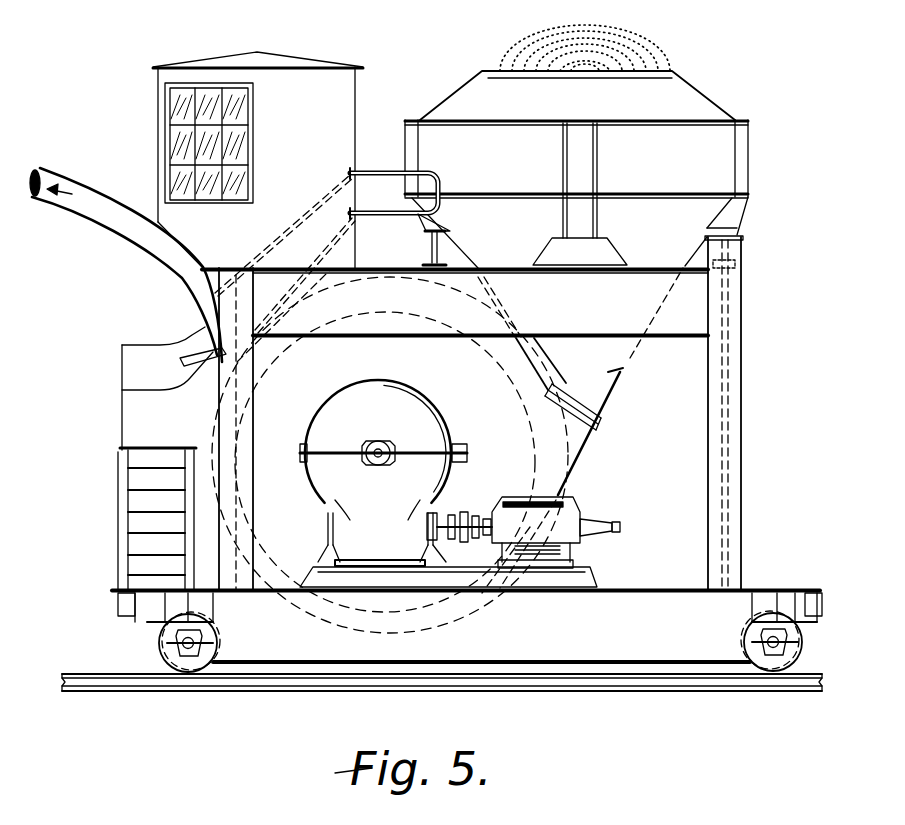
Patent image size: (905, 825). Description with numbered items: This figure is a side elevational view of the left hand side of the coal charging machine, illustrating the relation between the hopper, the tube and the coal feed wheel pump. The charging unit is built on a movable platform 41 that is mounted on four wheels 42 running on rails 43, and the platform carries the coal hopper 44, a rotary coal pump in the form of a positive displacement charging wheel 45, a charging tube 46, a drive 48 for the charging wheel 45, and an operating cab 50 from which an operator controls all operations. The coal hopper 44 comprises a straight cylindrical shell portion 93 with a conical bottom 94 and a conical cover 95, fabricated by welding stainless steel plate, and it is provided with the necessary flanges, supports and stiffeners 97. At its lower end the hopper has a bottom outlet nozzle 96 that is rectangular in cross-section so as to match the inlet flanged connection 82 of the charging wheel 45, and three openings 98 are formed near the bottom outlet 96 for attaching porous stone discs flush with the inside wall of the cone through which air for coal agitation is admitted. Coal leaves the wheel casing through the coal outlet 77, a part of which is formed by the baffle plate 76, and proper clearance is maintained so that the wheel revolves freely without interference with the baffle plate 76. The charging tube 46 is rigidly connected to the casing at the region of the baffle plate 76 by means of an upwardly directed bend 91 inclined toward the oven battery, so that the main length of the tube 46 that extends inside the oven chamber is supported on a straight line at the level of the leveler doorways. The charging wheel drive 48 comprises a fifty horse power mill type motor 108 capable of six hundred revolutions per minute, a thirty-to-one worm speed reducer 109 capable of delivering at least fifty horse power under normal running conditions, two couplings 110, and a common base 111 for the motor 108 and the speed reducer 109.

The movable platform 41 is at (247, 594).
The wheels 42 is at (158, 655).
The rails 43 is at (293, 681).
The coal hopper 44 is at (735, 65).
The charging wheel 45 is at (512, 445).
The charging tube 46 is at (133, 247).
The charging wheel drive 48 is at (565, 507).
The operating cab 50 is at (335, 85).
The baffle plate 76 is at (248, 438).
The coal outlet 77 is at (203, 391).
The inlet flanged connection 82 is at (619, 377).
The upwardly directed bend 91 is at (153, 293).
The cylindrical shell portion 93 is at (722, 163).
The conical bottom 94 is at (480, 291).
The conical cover 95 is at (705, 106).
The bottom outlet nozzle 96 is at (613, 390).
The flanges, supports and stiffeners 97 is at (585, 155).
The openings 98 is at (543, 347).
The mill type motor 108 is at (570, 541).
The worm speed reducer 109 is at (338, 498).
The couplings 110 is at (507, 493).
The common base 111 is at (535, 574).